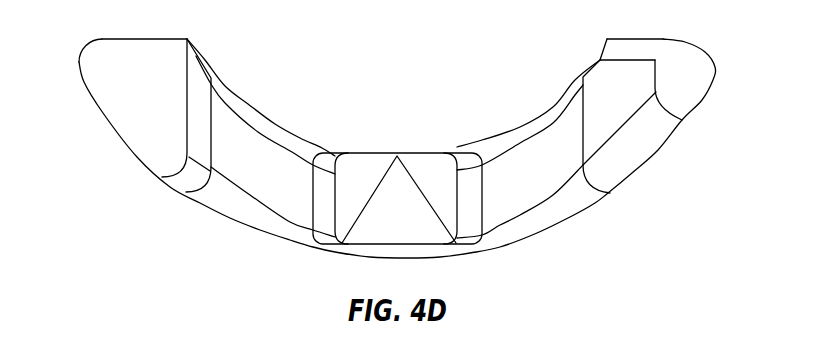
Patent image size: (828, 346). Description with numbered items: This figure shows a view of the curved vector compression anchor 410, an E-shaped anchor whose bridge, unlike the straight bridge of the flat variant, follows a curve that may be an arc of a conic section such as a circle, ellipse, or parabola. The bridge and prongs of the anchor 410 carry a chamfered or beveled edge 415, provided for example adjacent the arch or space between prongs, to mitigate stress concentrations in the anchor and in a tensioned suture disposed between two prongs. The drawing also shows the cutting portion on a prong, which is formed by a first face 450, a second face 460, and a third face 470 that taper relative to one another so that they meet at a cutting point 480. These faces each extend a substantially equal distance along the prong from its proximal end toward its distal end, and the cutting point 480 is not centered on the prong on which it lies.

The curved vector compression anchor 410 is at (247, 99).
The chamfered or beveled edge 415 is at (568, 204).
The first face 450 is at (375, 165).
The second face 460 is at (428, 165).
The third face 470 is at (397, 232).
The cutting point 480 is at (397, 156).